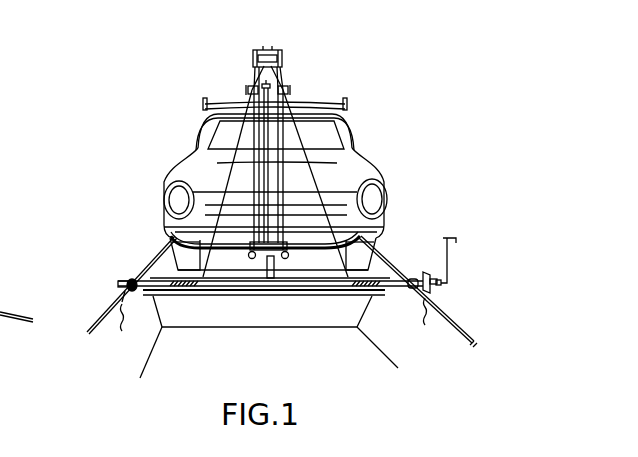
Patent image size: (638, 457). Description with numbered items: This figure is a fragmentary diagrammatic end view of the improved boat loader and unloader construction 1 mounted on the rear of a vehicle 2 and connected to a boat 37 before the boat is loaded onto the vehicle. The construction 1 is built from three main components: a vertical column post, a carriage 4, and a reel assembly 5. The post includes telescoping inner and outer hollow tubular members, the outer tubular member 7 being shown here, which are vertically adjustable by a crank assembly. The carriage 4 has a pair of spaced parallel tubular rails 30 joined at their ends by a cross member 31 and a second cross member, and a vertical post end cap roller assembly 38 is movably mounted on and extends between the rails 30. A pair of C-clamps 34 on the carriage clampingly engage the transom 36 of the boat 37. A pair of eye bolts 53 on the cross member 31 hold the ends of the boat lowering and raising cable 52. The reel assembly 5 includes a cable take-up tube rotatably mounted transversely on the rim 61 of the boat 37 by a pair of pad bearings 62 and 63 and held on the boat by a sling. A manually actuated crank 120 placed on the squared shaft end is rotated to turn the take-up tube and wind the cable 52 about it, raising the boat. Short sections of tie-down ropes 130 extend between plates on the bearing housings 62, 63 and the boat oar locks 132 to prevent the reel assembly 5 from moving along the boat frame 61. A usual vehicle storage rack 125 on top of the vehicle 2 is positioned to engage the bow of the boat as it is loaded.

The boat loader and unloader construction 1 is at (291, 61).
The vehicle 2 is at (367, 157).
The carriage 4 is at (250, 64).
The reel assembly 5 is at (117, 278).
The outer hollow tubular member 7 is at (265, 163).
The tubular rails 30 is at (282, 163).
The cross member 31 is at (268, 49).
The C-clamps 34 is at (252, 259).
The transom 36 is at (193, 262).
The boat 37 is at (314, 366).
The vertical post end cap roller assembly 38 is at (248, 79).
The boat lowering and raising cable 52 is at (298, 142).
The eye bolts 53 is at (276, 50).
The rim 61 is at (457, 328).
The pad bearing 62 is at (114, 275).
The pad bearing 63 is at (406, 294).
The crank 120 is at (445, 263).
The vehicle storage rack 125 is at (322, 110).
The tie-down ropes 130 is at (120, 294).
The oar locks 132 is at (430, 312).